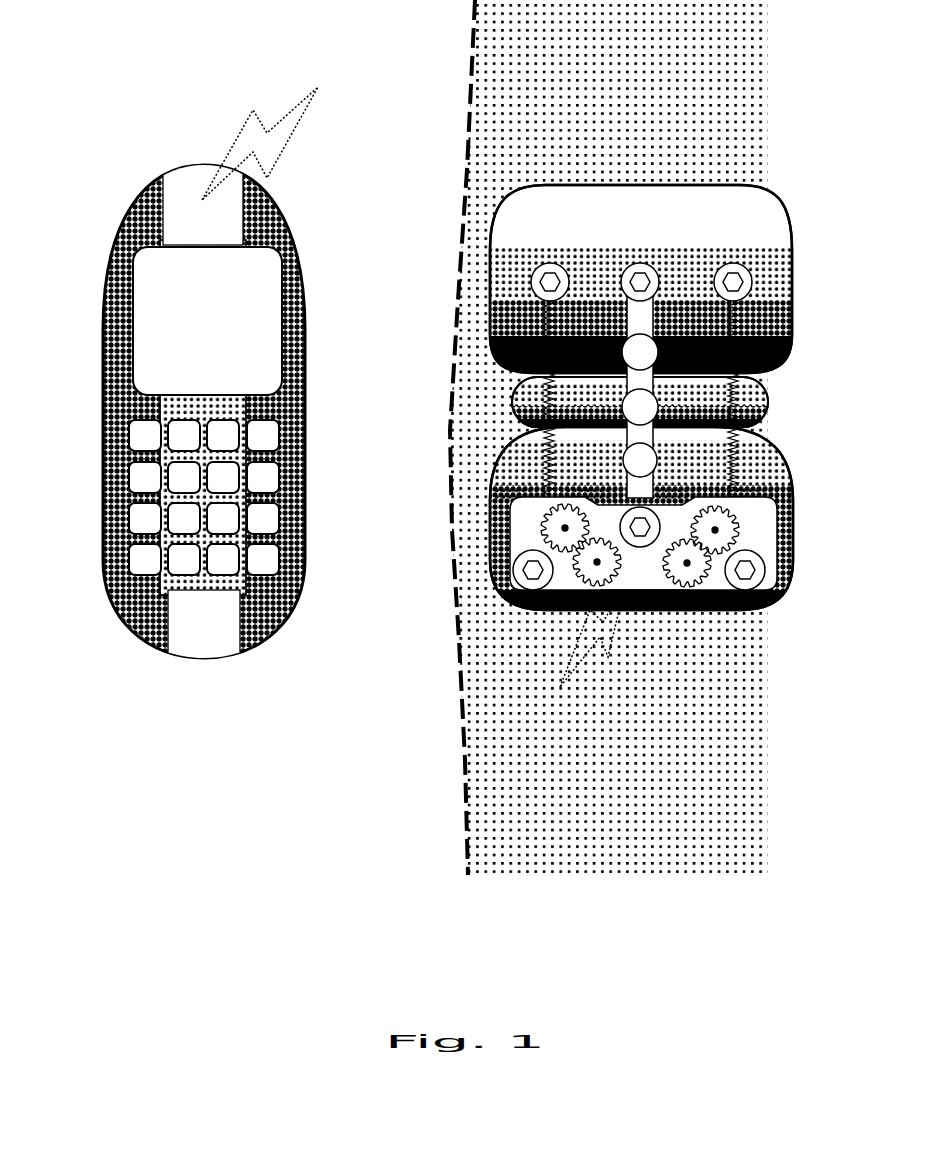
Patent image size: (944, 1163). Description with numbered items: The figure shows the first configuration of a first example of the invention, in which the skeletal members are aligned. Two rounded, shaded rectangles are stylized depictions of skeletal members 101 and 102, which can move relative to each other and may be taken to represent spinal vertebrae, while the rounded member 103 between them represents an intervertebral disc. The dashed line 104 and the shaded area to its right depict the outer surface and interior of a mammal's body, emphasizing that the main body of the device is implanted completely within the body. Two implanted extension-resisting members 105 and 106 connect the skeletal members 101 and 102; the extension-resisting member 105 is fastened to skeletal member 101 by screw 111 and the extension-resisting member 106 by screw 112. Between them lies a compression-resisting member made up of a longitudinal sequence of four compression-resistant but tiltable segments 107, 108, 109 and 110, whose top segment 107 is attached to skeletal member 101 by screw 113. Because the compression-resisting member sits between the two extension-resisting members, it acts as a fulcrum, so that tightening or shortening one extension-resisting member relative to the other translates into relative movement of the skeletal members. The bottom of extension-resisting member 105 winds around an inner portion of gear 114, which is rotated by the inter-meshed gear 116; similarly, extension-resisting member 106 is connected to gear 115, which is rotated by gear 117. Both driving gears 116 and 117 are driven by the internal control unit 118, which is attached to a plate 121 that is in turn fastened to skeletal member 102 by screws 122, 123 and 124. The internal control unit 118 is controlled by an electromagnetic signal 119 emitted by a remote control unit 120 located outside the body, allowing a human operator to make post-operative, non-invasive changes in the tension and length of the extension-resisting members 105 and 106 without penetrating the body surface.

The skeletal member 101 is at (507, 282).
The skeletal member 102 is at (497, 503).
The rounded member 103 is at (520, 400).
The dashed line 104 is at (462, 68).
The extension-resisting member 105 is at (548, 483).
The extension-resisting member 106 is at (737, 505).
The top segment 107 is at (645, 352).
The segment 108 is at (645, 405).
The segment 109 is at (645, 458).
The segment 110 is at (645, 492).
The screw 111 is at (548, 275).
The screw 112 is at (734, 263).
The screw 113 is at (640, 263).
The gear 114 is at (553, 529).
The gear 115 is at (722, 532).
The gear 116 is at (597, 562).
The gear 117 is at (690, 566).
The internal control unit 118 is at (647, 606).
The electromagnetic signal 119 is at (247, 135).
The remote control unit 120 is at (150, 210).
The plate 121 is at (757, 518).
The screw 122 is at (527, 572).
The screw 123 is at (670, 607).
The screw 124 is at (750, 577).